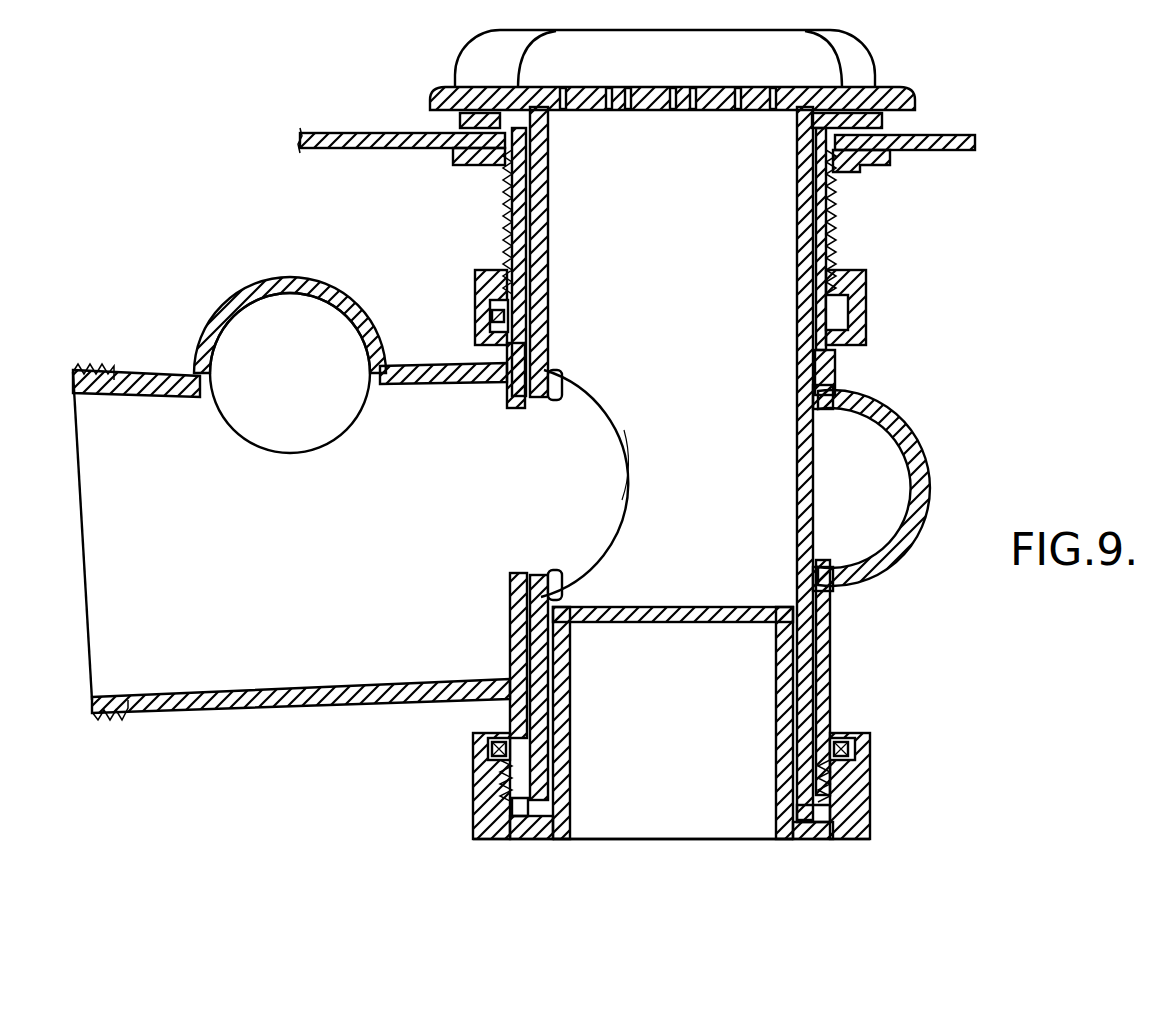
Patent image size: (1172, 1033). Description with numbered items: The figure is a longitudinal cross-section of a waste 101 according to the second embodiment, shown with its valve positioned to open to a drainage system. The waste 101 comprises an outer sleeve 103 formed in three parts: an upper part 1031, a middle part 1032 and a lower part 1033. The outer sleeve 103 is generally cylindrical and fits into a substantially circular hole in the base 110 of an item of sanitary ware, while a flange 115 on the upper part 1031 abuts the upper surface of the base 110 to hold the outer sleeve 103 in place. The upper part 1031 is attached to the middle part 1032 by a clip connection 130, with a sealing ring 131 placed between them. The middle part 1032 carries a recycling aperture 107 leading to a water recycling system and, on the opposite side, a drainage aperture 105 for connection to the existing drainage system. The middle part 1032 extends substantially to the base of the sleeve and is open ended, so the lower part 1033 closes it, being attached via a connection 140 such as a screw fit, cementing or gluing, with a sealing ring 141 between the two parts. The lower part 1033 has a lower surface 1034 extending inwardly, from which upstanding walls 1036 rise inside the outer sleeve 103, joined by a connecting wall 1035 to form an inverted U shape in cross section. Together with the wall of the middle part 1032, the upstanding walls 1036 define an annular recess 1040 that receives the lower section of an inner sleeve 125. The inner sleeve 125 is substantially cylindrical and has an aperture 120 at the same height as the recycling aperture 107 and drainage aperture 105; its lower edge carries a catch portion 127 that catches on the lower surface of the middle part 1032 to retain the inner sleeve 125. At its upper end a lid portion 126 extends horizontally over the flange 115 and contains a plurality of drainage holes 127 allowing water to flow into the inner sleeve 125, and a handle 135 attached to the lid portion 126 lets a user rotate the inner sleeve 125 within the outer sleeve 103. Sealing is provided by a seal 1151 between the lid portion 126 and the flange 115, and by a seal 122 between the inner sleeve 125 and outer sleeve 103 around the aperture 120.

The waste 101 is at (380, 88).
The outer sleeve 103 is at (503, 243).
The drainage aperture 105 is at (500, 490).
The recycling aperture 107 is at (890, 480).
The base of the item of sanitary ware 110 is at (323, 146).
The flange 115 is at (470, 153).
The aperture 120 is at (632, 470).
The seal 122 is at (548, 400).
The inner sleeve 125 is at (797, 345).
The lid portion 126 is at (838, 84).
The drainage holes 127 is at (694, 110).
The clip connection 130 is at (478, 318).
The sealing ring 131 is at (480, 300).
The handle 135 is at (800, 14).
The connection 140 is at (478, 752).
The sealing ring 141 is at (842, 742).
The upper part 1031 is at (838, 240).
The middle part 1032 is at (838, 372).
The lower part 1033 is at (870, 800).
The lower surface 1034 is at (497, 840).
The connecting wall 1035 is at (672, 623).
The upstanding walls 1036 is at (568, 770).
The annular recess 1040 is at (825, 627).
The seal 1151 is at (505, 85).